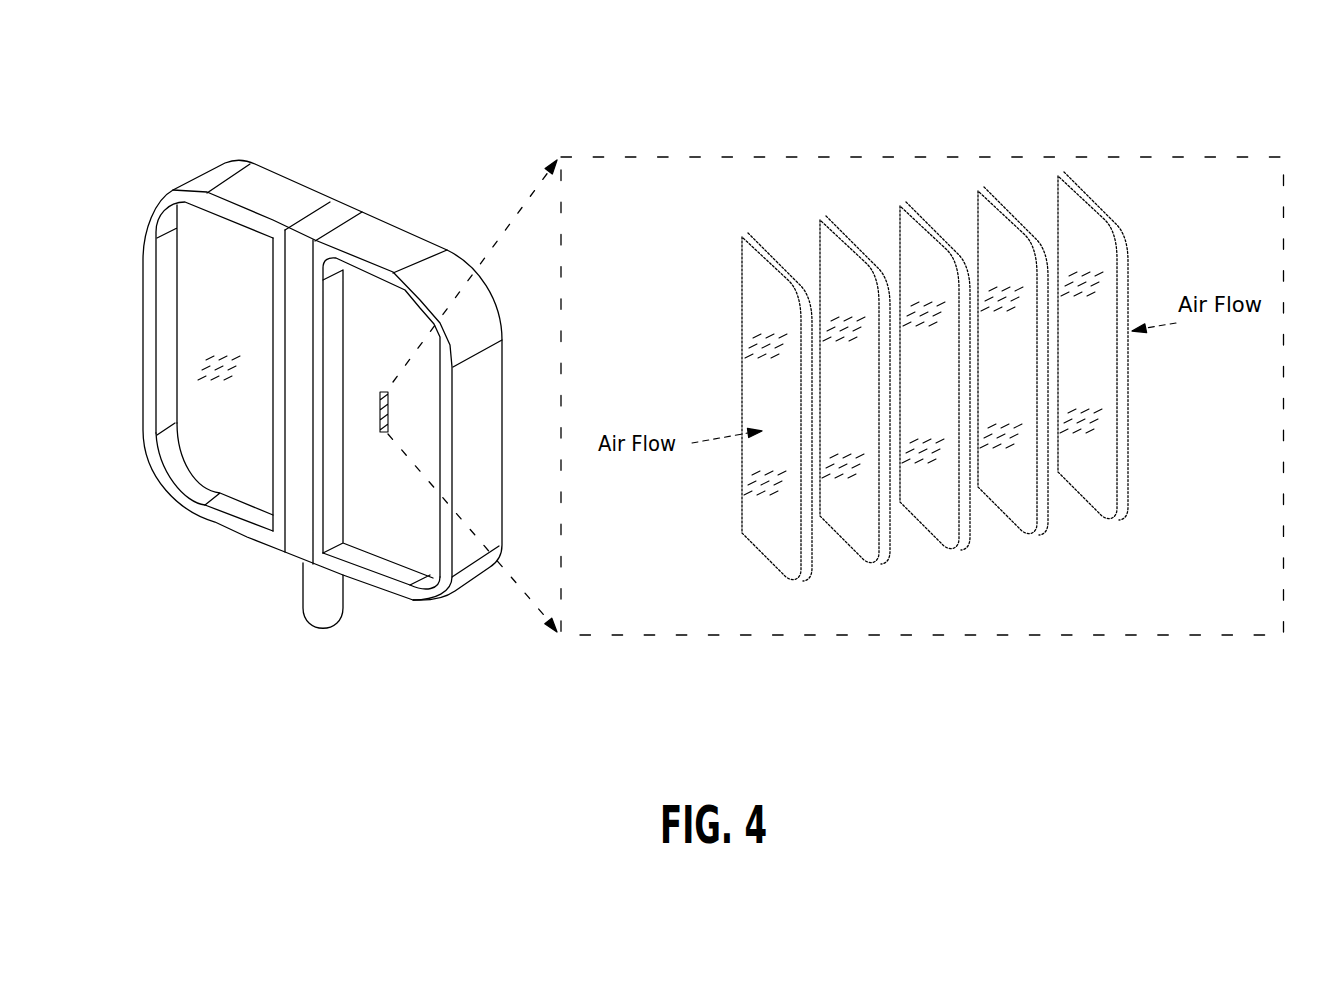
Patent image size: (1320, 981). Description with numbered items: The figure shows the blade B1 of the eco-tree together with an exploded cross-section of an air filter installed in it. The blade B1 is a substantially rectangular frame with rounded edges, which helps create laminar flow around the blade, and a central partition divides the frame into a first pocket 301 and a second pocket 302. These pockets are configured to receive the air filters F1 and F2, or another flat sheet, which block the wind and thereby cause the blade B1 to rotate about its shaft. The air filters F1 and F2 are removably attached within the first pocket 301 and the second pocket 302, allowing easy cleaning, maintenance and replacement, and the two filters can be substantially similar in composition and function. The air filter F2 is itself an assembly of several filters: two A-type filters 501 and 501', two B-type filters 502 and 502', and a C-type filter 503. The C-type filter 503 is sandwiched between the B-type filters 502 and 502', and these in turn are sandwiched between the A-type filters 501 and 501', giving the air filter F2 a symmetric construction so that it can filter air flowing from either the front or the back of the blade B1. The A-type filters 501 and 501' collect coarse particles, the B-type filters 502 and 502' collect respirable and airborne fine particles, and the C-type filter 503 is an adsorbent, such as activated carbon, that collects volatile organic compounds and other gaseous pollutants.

The blade B1 is at (335, 167).
The air filter F1 is at (227, 265).
The air filter F2 is at (357, 318).
The first pocket 301 is at (197, 495).
The second pocket 302 is at (400, 580).
The A-type filter 501 is at (761, 341).
The B-type filter 502 is at (843, 317).
The C-type filter 503 is at (918, 230).
The B-type filter 502' is at (1002, 285).
The A-type filter 501' is at (1084, 276).